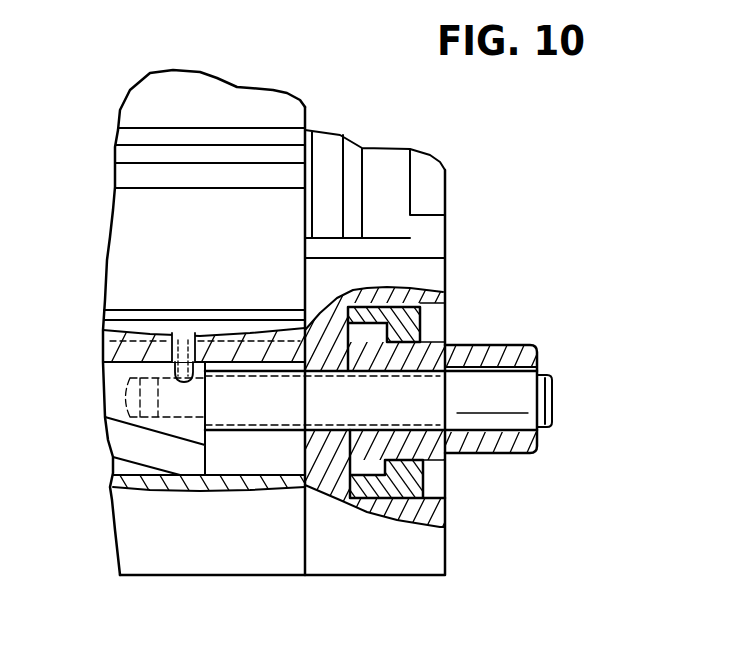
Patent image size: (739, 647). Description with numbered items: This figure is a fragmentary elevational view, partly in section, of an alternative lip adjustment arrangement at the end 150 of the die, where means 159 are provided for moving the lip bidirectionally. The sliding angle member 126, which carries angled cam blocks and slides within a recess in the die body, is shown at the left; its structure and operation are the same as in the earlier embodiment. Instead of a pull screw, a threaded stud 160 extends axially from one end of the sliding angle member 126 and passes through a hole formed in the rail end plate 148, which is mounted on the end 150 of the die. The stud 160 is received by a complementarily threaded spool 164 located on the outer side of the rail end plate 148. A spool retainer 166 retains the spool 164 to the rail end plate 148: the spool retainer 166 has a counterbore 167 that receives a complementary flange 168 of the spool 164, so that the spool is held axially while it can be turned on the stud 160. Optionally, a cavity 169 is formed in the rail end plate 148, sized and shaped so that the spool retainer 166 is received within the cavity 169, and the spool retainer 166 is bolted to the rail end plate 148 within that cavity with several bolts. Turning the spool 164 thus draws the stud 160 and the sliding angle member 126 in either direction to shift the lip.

The sliding angle member 126 is at (108, 373).
The rail end plate 148 is at (408, 567).
The end of the die 150 is at (305, 552).
The means for moving the lip bidirectionally 159 is at (482, 473).
The threaded stud 160 is at (432, 382).
The spool 164 is at (537, 352).
The spool retainer 166 is at (410, 477).
The counterbore 167 is at (363, 480).
The flange 168 is at (428, 522).
The cavity 169 is at (428, 302).